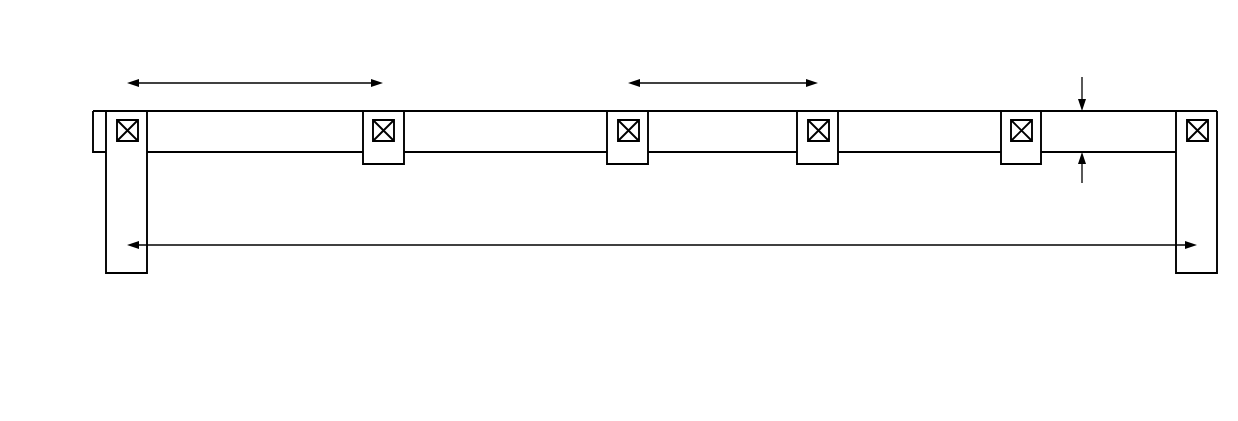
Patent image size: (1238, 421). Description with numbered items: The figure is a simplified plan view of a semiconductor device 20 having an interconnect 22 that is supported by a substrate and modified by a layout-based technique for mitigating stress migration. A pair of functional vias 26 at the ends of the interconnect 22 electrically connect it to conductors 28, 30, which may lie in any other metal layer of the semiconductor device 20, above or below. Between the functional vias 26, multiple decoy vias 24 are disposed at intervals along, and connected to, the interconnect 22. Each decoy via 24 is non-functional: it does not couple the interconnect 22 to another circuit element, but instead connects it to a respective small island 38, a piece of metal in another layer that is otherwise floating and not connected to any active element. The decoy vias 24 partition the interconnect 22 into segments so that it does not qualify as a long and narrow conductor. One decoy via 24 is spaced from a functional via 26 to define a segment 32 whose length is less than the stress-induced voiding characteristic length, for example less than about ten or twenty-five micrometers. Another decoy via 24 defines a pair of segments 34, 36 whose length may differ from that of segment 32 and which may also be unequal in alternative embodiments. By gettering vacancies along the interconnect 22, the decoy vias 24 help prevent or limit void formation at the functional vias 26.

The semiconductor device 20 is at (915, 58).
The interconnect 22 is at (522, 110).
The decoy via 24 is at (383, 118).
The functional via 26 is at (127, 118).
The conductor 28 is at (147, 195).
The conductor 30 is at (1176, 205).
The segment 32 is at (272, 153).
The segment 34 is at (718, 153).
The segment 36 is at (913, 153).
The small island 38 is at (404, 158).